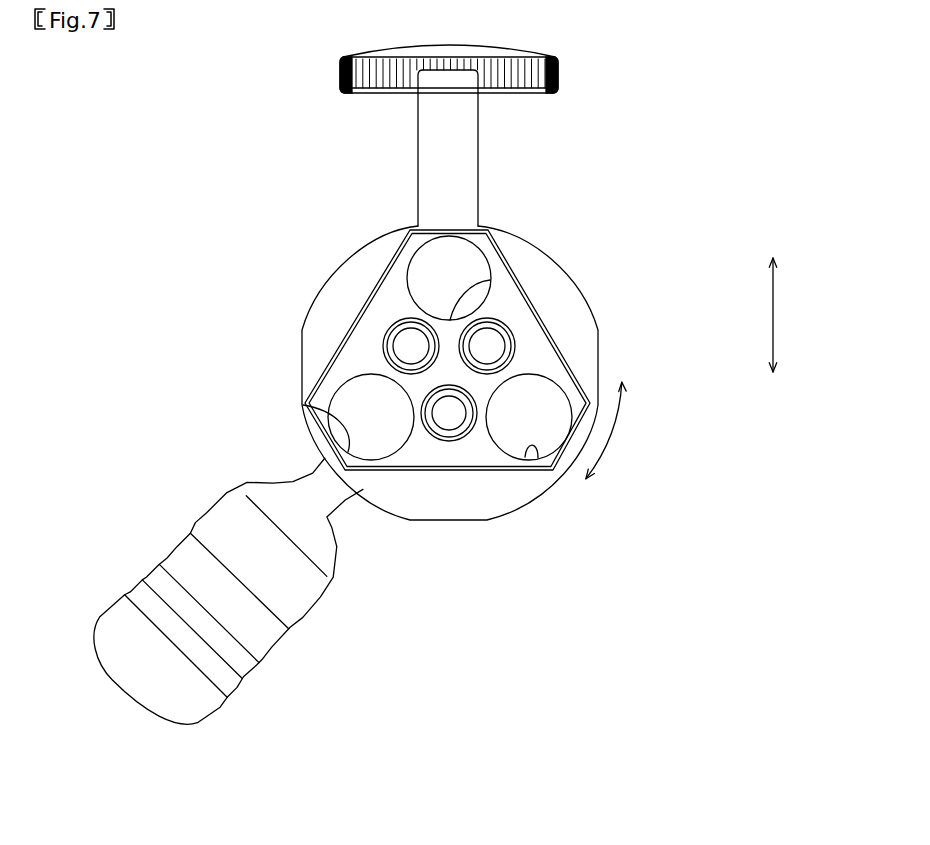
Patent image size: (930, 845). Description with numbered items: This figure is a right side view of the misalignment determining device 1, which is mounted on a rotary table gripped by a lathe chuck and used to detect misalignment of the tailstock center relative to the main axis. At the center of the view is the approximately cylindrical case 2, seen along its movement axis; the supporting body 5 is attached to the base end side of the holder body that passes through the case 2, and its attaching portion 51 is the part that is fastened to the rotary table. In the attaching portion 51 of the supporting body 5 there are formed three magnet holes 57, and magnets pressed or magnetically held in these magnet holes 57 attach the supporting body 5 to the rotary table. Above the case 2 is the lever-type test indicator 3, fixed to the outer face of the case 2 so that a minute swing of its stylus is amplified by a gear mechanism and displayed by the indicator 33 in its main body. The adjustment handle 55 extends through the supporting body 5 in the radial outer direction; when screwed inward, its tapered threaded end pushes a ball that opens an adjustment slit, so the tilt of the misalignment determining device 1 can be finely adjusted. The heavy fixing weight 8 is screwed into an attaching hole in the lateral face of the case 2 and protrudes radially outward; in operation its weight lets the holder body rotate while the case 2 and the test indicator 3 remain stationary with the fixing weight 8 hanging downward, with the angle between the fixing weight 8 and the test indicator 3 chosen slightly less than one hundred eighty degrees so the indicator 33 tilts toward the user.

The misalignment determining device 1 is at (593, 183).
The case 2 is at (306, 311).
The test indicator 3 is at (562, 76).
The indicator 33 is at (342, 81).
The adjustment handle 55 is at (432, 146).
The supporting body 5 is at (541, 318).
The magnet holes 57 is at (490, 279).
The attaching portion 51 is at (433, 453).
The fixing weight 8 is at (181, 538).